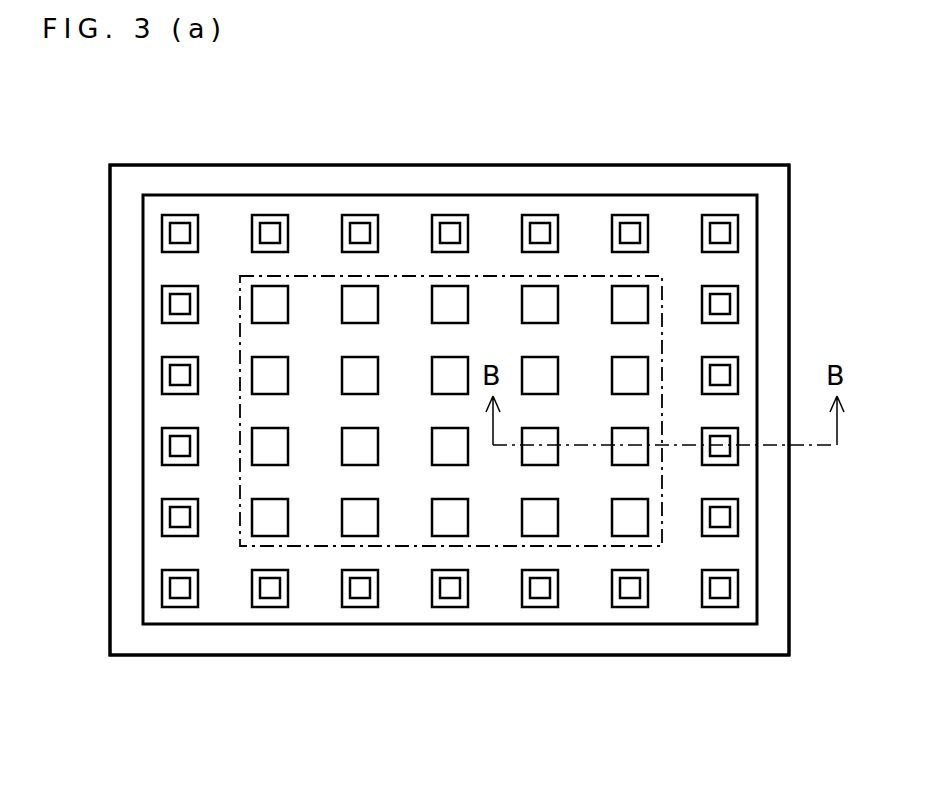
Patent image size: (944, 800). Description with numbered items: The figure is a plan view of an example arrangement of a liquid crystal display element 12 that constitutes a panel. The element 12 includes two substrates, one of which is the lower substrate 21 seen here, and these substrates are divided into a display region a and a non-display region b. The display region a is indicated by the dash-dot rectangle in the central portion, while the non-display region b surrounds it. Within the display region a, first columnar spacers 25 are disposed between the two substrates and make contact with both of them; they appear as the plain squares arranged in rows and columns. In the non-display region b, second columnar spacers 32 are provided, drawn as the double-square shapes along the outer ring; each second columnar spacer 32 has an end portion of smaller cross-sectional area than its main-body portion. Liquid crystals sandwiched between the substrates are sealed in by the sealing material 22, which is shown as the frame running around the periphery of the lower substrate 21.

The liquid crystal display element 12 is at (765, 98).
The lower substrate 21 is at (740, 262).
The sealing material 22 is at (780, 322).
The first columnar spacers 25 is at (527, 519).
The second columnar spacers 32 is at (738, 512).
The display region a is at (501, 276).
The non-display region b is at (583, 221).